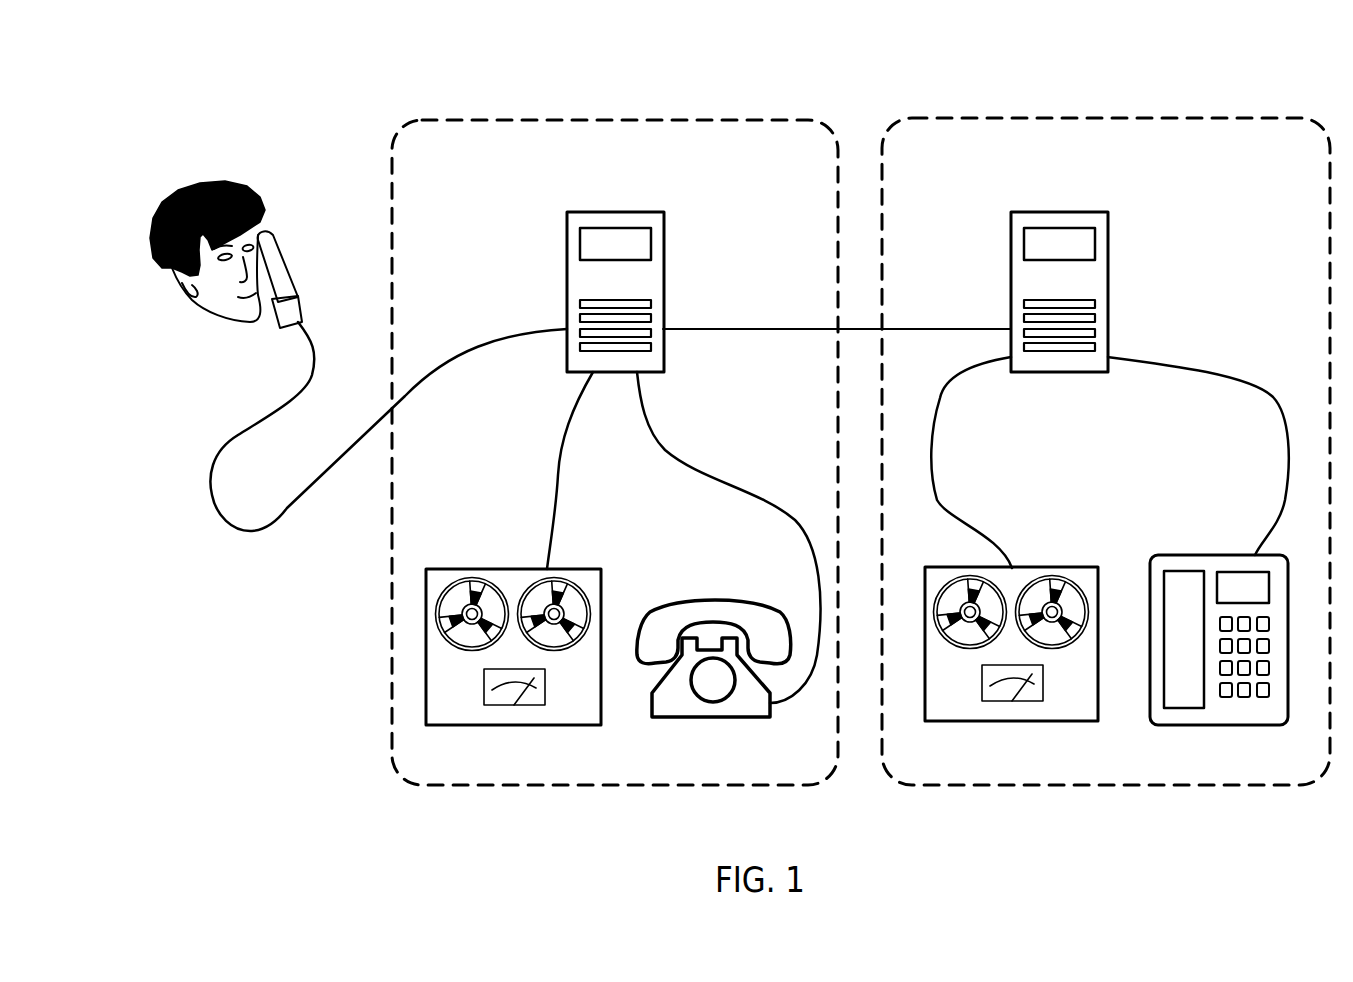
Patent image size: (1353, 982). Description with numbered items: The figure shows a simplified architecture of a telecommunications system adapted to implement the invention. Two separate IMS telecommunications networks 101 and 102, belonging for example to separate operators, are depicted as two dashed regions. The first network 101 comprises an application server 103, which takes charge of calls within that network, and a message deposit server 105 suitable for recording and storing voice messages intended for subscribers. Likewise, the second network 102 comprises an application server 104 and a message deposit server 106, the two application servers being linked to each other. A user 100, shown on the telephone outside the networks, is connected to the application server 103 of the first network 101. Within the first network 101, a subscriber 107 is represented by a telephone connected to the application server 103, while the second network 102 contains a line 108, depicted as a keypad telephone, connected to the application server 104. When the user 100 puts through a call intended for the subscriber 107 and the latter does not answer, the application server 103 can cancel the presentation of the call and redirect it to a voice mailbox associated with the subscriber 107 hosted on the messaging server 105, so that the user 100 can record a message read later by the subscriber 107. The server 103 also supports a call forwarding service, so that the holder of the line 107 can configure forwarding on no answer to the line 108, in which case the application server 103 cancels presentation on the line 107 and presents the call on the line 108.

The user 100 is at (217, 183).
The telecommunications network 101 is at (652, 118).
The telecommunications network 102 is at (1041, 118).
The application server 103 is at (565, 224).
The application server 104 is at (1108, 224).
The message deposit server 105 is at (457, 568).
The message deposit server 106 is at (1042, 567).
The subscriber 107 is at (655, 605).
The line 108 is at (1172, 555).